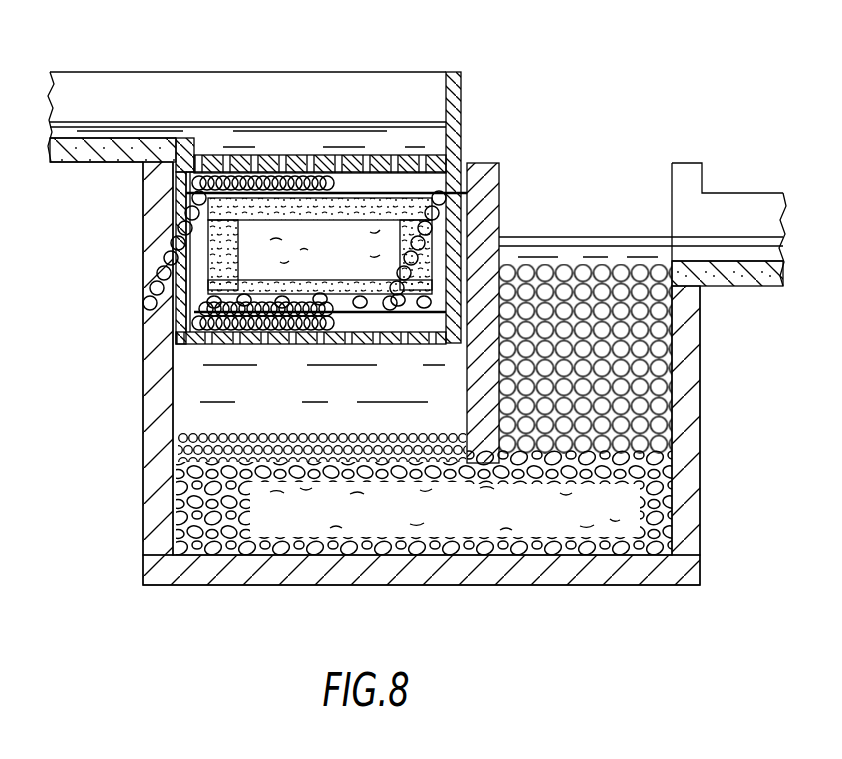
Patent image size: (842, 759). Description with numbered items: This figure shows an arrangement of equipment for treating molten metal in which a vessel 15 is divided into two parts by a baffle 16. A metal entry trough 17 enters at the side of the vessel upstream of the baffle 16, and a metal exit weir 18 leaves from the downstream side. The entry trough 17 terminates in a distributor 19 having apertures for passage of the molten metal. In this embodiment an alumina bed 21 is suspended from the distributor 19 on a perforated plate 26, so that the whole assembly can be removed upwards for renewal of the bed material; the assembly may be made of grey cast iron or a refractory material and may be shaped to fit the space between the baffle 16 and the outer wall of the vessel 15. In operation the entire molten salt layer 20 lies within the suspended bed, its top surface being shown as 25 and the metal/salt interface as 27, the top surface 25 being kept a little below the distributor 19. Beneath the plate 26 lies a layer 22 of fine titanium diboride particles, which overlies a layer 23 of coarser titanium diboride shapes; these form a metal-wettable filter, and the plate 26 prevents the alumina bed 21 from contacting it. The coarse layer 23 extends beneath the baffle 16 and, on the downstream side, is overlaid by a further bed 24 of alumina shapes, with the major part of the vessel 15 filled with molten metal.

The vessel 15 is at (143, 457).
The baffle 16 is at (478, 363).
The metal entry trough 17 is at (123, 88).
The metal exit weir 18 is at (724, 213).
The distributor 19 is at (345, 155).
The molten salt layer 20 is at (248, 237).
The alumina bed 21 is at (184, 270).
The layer of fine titanium diboride particles 22 is at (265, 432).
The layer of coarser titanium diboride shapes 23 is at (207, 538).
The bed of alumina shapes 24 is at (641, 351).
The top surface of the salt layer 25 is at (200, 183).
The perforated plate 26 is at (218, 346).
The metal/salt interface 27 is at (194, 311).